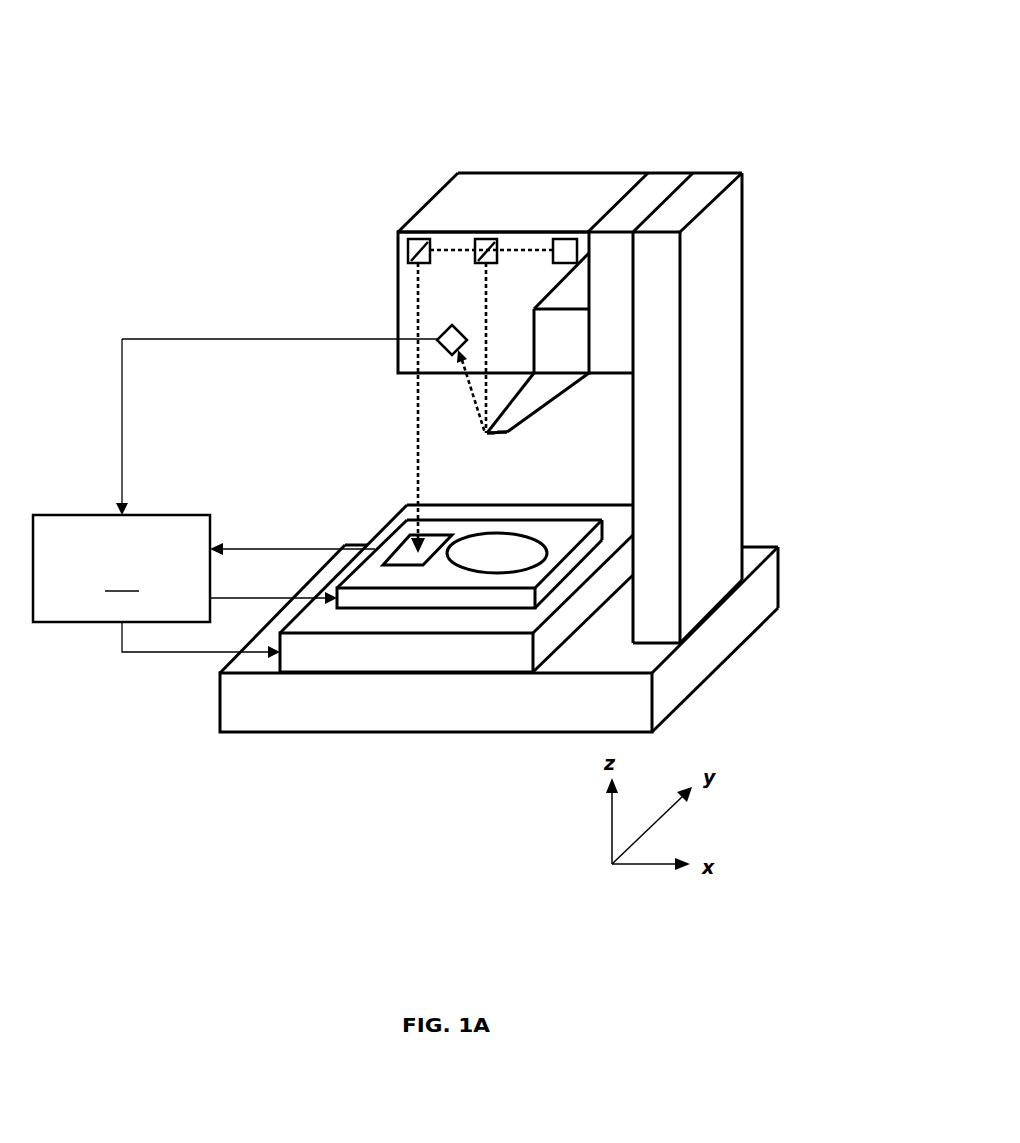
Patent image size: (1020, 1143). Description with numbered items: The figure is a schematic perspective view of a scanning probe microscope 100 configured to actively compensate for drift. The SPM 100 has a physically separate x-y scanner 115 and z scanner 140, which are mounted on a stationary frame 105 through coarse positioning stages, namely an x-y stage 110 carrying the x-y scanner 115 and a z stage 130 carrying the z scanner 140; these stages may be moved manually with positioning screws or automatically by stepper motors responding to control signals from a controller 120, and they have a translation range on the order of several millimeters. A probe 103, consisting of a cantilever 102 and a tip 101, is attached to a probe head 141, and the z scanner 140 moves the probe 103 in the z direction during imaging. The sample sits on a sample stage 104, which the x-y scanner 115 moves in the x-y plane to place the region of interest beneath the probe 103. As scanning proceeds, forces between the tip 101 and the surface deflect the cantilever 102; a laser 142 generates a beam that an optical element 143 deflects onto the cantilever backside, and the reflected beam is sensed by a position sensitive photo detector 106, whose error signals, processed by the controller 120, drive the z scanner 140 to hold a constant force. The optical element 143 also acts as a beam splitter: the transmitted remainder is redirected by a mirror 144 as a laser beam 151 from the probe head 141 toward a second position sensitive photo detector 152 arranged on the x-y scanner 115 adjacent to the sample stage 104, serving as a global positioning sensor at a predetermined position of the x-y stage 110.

The scanning probe microscope 100 is at (812, 71).
The tip 101 is at (490, 437).
The cantilever 102 is at (500, 436).
The probe 103 is at (525, 445).
The sample stage 104 is at (516, 563).
The stationary frame 105 is at (730, 393).
The position sensitive photo detector 106 is at (443, 355).
The x-y stage 110 is at (418, 663).
The x-y scanner 115 is at (563, 578).
The controller 120 is at (235, 498).
The z stage 130 is at (668, 173).
The z scanner 140 is at (580, 353).
The probe head 141 is at (482, 211).
The laser 142 is at (567, 232).
The optical element 143 is at (487, 240).
The mirror 144 is at (418, 240).
The laser beam 151 is at (413, 470).
The position sensitive photo detector 152 is at (403, 537).